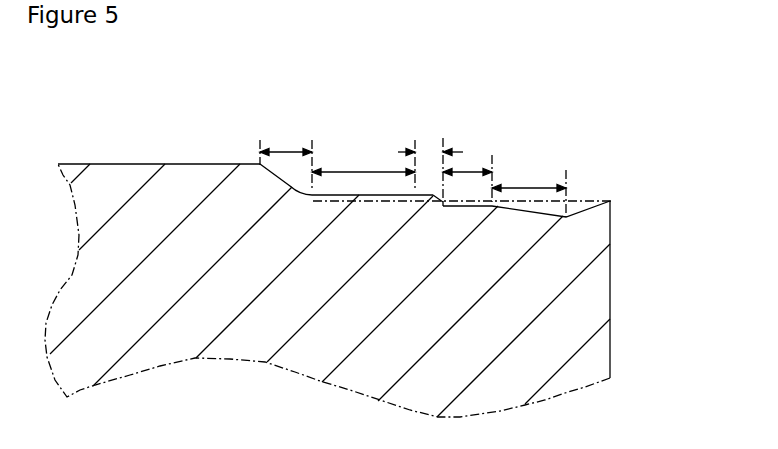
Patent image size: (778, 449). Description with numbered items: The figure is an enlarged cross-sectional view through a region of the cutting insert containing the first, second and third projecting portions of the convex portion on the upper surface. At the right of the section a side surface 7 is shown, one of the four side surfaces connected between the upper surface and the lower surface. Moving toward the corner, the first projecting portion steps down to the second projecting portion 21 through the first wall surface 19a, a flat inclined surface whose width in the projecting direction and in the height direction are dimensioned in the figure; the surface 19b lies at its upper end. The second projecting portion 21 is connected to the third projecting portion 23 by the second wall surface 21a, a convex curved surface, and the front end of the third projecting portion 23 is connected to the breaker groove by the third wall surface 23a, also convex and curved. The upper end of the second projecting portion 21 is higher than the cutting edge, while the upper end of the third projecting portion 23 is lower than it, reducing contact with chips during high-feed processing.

The side surface 7 is at (611, 288).
The land surface 19b is at (200, 164).
The first wall surface 19a is at (293, 152).
The second projecting portion 21 is at (358, 171).
The second wall surface 21a is at (450, 152).
The third projecting portion 23 is at (482, 172).
The third wall surface 23a is at (543, 188).